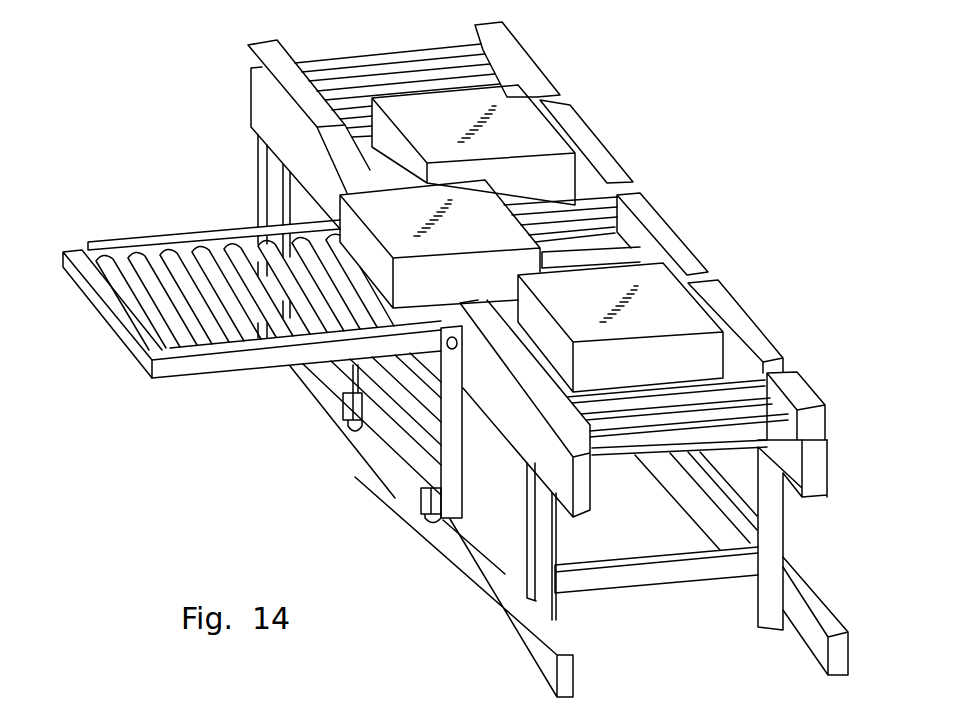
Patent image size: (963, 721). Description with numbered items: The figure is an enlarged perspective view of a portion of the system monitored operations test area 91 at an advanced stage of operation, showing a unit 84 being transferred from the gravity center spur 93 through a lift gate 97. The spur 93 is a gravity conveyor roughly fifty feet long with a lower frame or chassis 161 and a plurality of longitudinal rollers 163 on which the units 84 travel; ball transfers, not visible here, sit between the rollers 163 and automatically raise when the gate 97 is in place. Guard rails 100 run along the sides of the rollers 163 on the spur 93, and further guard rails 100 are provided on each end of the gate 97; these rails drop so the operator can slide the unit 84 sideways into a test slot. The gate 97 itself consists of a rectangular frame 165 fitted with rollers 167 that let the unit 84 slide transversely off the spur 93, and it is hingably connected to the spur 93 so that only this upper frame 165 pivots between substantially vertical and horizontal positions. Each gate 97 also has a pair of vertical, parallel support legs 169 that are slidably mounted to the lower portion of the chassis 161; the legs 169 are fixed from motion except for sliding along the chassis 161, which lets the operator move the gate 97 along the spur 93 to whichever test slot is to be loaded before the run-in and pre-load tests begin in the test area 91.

The system monitored operations (SMOPS) test area 91 is at (133, 111).
The lift gate 97 is at (225, 294).
The guard rails 100 is at (248, 50).
The gravity center spur 93 is at (386, 60).
The unit 84 is at (341, 192).
The longitudinal rollers 163 is at (606, 238).
The rollers 167 is at (155, 312).
The rectangular frame 165 is at (199, 366).
The support legs 169 is at (452, 466).
The lower frame or chassis 161 is at (492, 607).